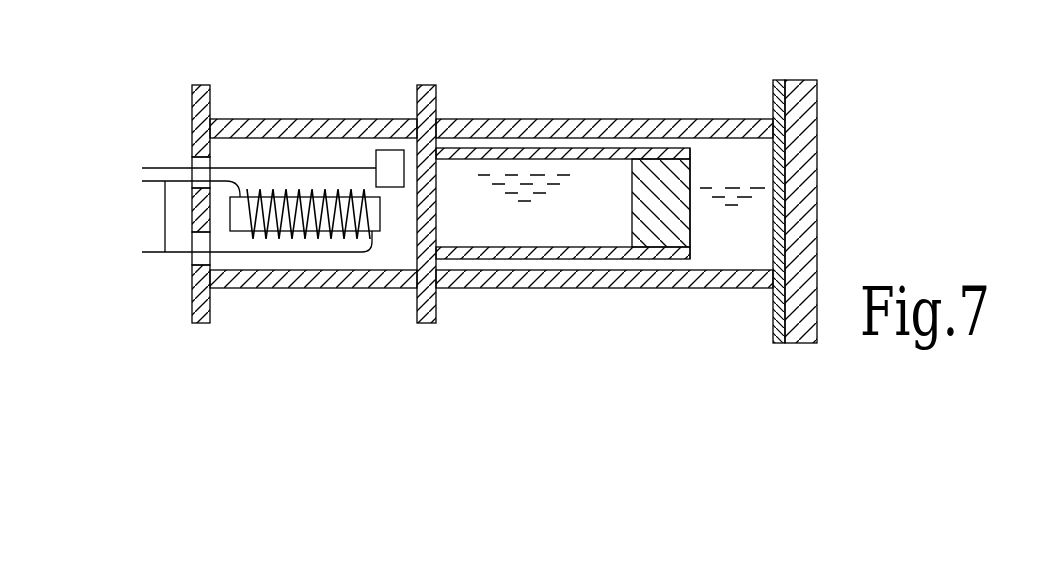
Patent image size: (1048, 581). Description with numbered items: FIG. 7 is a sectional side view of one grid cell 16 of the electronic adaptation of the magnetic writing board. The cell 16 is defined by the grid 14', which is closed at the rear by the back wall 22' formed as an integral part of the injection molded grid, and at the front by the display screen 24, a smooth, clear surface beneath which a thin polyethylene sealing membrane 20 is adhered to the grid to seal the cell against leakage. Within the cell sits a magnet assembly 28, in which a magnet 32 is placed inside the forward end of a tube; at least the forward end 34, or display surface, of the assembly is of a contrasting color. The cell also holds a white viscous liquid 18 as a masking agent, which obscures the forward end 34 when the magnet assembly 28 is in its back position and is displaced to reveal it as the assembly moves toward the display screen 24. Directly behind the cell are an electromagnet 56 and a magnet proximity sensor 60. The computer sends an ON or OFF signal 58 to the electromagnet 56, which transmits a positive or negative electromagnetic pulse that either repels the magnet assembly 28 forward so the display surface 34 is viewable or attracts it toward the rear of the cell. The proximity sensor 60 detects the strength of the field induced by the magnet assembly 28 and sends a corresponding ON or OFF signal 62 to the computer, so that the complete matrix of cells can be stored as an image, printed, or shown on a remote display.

The grid 14' is at (142, 215).
The grid cell 16 is at (775, 194).
The viscous liquid 18 is at (525, 233).
The sealing membrane 20 is at (780, 80).
The back wall 22' is at (467, 200).
The display screen 24 is at (817, 118).
The magnet assembly 28 is at (587, 136).
The magnet 32 is at (668, 2).
The forward end 34 is at (692, 232).
The electromagnet 56 is at (378, 222).
The ON/OFF signal 58 is at (165, 215).
The magnet proximity sensor 60 is at (390, 150).
The signal 62 is at (175, 167).